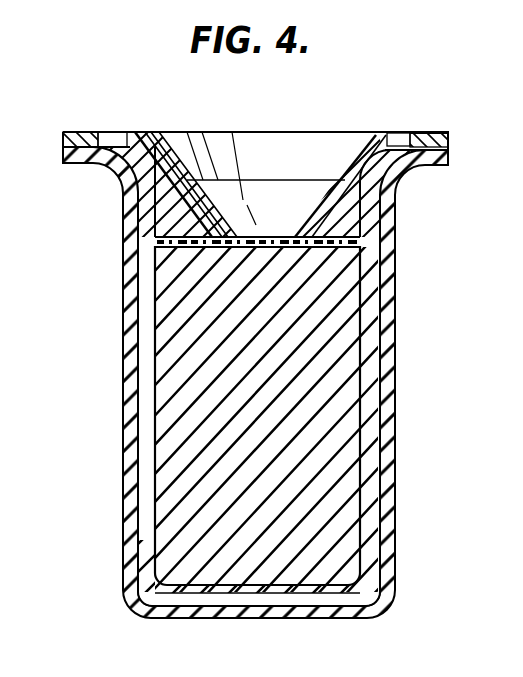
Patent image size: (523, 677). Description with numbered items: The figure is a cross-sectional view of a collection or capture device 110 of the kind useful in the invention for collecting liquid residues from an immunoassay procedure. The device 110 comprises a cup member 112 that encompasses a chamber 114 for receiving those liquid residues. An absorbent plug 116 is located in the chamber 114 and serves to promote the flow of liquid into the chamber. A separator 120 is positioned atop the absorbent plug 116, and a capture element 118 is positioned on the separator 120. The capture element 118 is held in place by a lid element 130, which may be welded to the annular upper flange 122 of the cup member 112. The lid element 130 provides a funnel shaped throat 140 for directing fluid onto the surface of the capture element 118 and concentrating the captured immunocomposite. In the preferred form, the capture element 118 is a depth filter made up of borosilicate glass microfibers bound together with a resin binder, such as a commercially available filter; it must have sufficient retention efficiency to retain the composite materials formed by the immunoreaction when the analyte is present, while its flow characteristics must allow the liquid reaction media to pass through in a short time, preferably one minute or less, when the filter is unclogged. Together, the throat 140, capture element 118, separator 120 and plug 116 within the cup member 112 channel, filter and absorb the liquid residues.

The capture device 110 is at (121, 377).
The cup member 112 is at (386, 463).
The chamber 114 is at (147, 469).
The absorbent plug 116 is at (357, 557).
The capture element 118 is at (363, 236).
The separator 120 is at (390, 258).
The annular upper flange 122 is at (78, 163).
The lid element 130 is at (432, 134).
The funnel shaped throat 140 is at (286, 212).